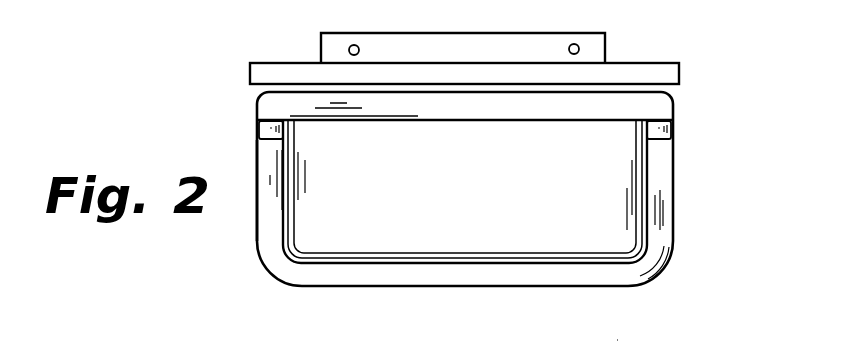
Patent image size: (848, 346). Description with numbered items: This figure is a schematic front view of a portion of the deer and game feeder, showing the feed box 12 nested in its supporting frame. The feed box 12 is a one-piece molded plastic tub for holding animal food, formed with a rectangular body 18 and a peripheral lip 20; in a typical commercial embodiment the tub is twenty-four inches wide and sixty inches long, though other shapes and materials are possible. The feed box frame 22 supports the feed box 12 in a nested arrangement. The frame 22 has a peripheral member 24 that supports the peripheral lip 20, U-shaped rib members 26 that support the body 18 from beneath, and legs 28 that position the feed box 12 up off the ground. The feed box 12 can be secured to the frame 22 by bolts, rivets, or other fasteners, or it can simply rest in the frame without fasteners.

The feed box 12 is at (573, 263).
The rectangular body 18 is at (341, 264).
The peripheral lip 20 is at (289, 63).
The feed box frame 22 is at (687, 103).
The peripheral member 24 is at (250, 77).
The U-shaped rib members 26 is at (259, 250).
The legs 28 is at (617, 341).